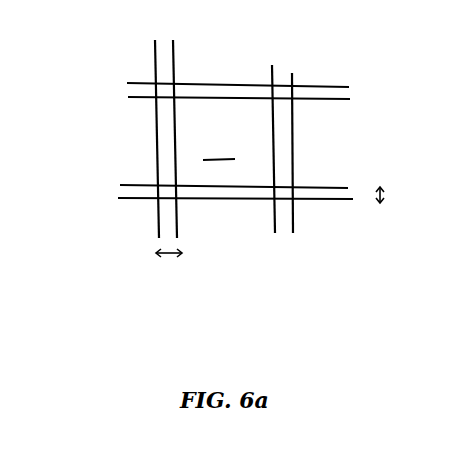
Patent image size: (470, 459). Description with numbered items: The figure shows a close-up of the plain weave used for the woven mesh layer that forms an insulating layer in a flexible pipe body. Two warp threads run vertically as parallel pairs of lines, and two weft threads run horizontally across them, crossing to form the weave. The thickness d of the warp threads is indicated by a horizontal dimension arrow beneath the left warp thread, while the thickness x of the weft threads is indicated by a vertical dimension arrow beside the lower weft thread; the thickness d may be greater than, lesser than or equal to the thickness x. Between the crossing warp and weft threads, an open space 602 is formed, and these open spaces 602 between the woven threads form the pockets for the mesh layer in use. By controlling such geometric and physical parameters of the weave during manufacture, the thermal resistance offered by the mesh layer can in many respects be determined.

The open space 602 is at (223, 142).
The thickness of the warp threads d is at (169, 265).
The thickness of the weft threads x is at (392, 194).